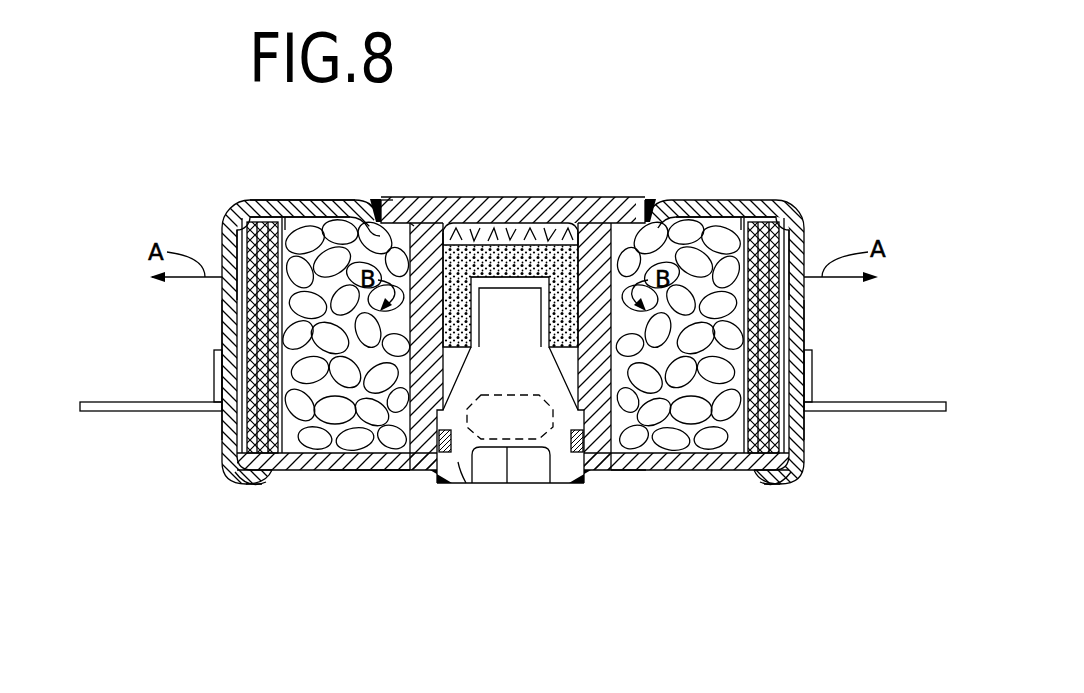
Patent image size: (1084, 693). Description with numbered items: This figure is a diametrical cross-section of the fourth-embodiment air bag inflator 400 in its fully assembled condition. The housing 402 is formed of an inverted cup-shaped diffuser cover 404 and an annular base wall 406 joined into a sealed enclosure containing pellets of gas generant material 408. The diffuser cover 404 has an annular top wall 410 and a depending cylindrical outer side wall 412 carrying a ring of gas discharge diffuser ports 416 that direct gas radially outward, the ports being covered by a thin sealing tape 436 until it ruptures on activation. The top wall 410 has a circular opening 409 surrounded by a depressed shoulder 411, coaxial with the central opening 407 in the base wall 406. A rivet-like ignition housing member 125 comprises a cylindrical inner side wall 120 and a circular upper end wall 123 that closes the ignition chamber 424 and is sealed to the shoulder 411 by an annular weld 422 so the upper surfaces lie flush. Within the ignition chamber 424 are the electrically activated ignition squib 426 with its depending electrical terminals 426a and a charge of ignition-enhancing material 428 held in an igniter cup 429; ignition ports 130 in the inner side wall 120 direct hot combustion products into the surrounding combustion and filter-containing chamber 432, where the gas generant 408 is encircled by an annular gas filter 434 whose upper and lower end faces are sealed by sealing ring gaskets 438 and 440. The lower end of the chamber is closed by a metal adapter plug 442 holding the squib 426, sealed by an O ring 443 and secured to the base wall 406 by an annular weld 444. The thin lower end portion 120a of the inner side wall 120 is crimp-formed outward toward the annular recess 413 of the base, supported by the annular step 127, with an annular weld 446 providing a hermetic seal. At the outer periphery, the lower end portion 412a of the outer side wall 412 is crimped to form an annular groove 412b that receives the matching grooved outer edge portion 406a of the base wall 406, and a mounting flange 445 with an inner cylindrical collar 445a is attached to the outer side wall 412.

The air bag inflator 400 is at (527, 627).
The housing 402 is at (202, 327).
The diffuser cover 404 is at (805, 198).
The base wall 406 is at (330, 472).
The outer edge portion of the base wall 406a is at (250, 455).
The central opening 407 is at (435, 482).
The gas generant material 408 is at (310, 361).
The circular opening 409 is at (412, 225).
The annular top wall 410 is at (260, 199).
The shoulder 411 is at (393, 200).
The outer side wall 412 is at (235, 330).
The lower end portion of the outer side wall 412a is at (250, 484).
The annular groove 412b is at (250, 480).
The annular recess 413 is at (392, 472).
The gas discharge diffuser ports 416 is at (242, 303).
The annular weld 422 is at (377, 213).
The ignition chamber 424 is at (546, 268).
The ignition squib 426 is at (530, 480).
The electrical terminals 426a is at (517, 457).
The ignition-enhancing material 428 is at (488, 240).
The igniter cup 429 is at (586, 245).
The combustion and filter-containing chamber 432 is at (287, 215).
The annular gas filter 434 is at (235, 235).
The sealing tape 436 is at (230, 305).
The sealing ring gasket 438 is at (250, 210).
The sealing ring gasket 440 is at (250, 445).
The adapter plug 442 is at (466, 483).
The O ring 443 is at (525, 425).
The annular weld 444 is at (367, 471).
The mounting flange 445 is at (117, 401).
The inner cylindrical collar 445a is at (214, 387).
The annular weld 446 is at (602, 460).
The inner side wall 120 is at (443, 240).
The lower end portion of the inner side wall 120a is at (386, 471).
The circular upper end wall 123 is at (520, 300).
The ignition housing member 125 is at (520, 195).
The annular step 127 is at (614, 470).
The ignition ports 130 is at (436, 230).